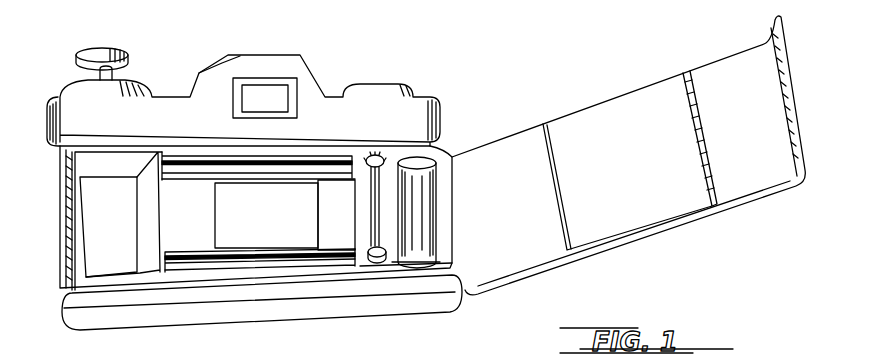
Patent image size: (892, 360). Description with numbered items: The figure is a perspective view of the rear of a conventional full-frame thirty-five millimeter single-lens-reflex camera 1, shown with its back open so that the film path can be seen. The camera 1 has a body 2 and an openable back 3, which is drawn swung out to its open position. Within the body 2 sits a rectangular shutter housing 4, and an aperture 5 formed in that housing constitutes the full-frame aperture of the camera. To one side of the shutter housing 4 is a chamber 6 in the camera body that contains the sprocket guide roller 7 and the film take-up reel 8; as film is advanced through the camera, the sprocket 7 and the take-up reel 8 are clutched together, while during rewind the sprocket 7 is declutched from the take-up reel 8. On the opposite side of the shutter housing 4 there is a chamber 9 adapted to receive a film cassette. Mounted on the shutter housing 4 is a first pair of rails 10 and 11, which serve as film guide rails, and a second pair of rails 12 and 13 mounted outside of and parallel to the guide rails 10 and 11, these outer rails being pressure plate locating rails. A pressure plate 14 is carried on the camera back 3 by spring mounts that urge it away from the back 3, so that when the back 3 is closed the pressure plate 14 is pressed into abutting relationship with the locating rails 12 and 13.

The camera 1 is at (321, 66).
The body 2 is at (67, 179).
The openable back 3 is at (716, 66).
The shutter housing 4 is at (173, 230).
The aperture 5 is at (218, 212).
The chamber 6 is at (400, 263).
The sprocket guide roller 7 is at (373, 184).
The film take-up reel 8 is at (428, 195).
The chamber 9 is at (90, 214).
The rail 10 is at (169, 176).
The rail 11 is at (167, 257).
The rail 12 is at (182, 163).
The rail 13 is at (207, 268).
The pressure plate 14 is at (578, 118).